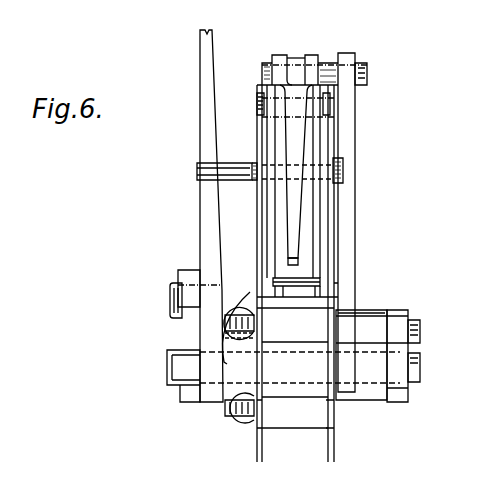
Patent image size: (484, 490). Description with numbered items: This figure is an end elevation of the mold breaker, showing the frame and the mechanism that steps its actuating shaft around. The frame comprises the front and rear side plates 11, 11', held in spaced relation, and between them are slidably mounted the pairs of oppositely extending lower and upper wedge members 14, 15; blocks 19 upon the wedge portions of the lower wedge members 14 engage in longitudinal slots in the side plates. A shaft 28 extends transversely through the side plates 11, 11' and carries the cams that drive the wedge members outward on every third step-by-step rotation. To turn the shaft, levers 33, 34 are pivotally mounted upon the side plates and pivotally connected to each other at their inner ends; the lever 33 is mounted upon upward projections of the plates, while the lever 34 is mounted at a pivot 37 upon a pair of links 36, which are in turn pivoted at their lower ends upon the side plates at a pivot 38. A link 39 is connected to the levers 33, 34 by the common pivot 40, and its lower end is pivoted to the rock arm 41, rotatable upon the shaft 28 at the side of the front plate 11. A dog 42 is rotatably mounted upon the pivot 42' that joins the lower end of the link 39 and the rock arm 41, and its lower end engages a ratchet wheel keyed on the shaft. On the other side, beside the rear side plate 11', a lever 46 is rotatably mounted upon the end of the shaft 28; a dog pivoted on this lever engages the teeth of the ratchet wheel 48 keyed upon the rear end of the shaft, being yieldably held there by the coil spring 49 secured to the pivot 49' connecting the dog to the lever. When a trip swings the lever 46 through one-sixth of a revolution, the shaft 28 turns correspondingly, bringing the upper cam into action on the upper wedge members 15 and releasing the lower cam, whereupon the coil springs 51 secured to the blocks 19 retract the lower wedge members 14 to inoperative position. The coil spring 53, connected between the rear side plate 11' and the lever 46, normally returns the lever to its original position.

The front side plate 11 is at (346, 424).
The rear side plate 11' is at (235, 432).
The lower wedge members 14 is at (302, 418).
The upper wedge members 15 is at (313, 328).
The blocks 19 is at (328, 282).
The shaft 28 is at (417, 370).
The lever 33 is at (310, 55).
The lever 34 is at (291, 138).
The links 36 is at (268, 226).
The pivot 37 is at (257, 108).
The pivot 38 is at (249, 290).
The link 39 is at (350, 150).
The common pivot 40 is at (359, 74).
The rock arm 41 is at (376, 320).
The dog 42 is at (414, 342).
The pivot 42' is at (432, 323).
The lever 46 is at (200, 220).
The ratchet wheel 48 is at (182, 390).
The coil spring 49 is at (174, 306).
The pivot 49' is at (150, 300).
The coil springs 51 is at (225, 411).
The coil spring 53 is at (238, 315).